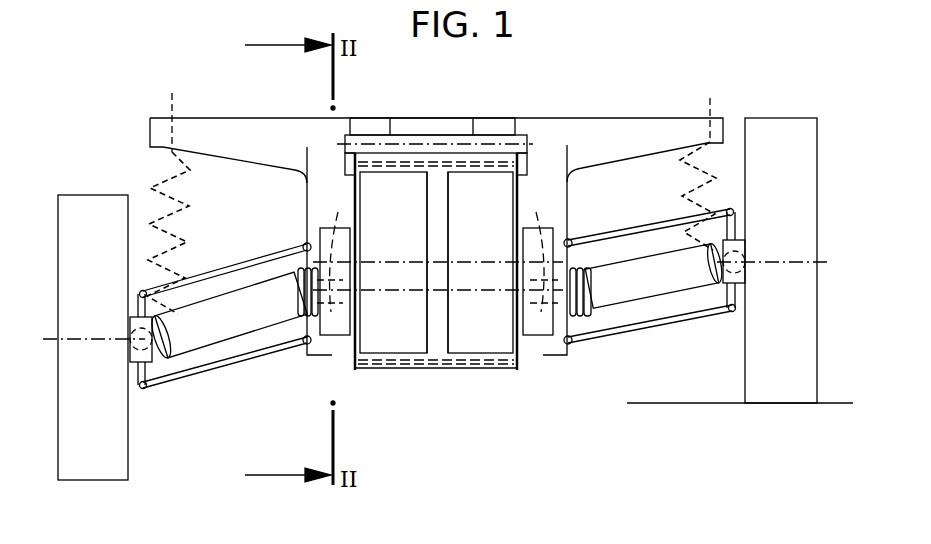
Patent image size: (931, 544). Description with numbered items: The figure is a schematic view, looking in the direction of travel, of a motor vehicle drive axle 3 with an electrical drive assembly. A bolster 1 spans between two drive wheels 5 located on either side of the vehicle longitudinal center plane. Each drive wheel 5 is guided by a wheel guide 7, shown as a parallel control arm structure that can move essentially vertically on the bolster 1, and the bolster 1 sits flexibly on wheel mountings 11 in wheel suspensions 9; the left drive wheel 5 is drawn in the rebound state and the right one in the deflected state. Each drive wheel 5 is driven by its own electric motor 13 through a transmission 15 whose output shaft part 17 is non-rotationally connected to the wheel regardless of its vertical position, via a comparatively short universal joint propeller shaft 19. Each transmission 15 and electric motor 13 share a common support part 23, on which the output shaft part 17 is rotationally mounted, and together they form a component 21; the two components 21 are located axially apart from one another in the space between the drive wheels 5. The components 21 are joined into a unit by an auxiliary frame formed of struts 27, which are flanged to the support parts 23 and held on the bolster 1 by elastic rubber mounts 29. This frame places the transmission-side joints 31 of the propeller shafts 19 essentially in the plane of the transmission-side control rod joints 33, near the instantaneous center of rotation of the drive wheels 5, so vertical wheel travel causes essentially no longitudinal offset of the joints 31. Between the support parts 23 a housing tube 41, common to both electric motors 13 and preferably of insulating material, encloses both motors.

The bolster 1 is at (593, 137).
The drive axle 3 is at (608, 358).
The drive wheel 5 is at (68, 212).
The wheel guide 7 is at (187, 390).
The wheel suspension 9 is at (172, 104).
The wheel mounting 11 is at (132, 356).
The electric motor 13 is at (392, 333).
The transmission 15 is at (343, 325).
The output shaft part 17 is at (338, 214).
The universal joint propeller shaft 19 is at (224, 318).
The component 21 is at (462, 366).
The support part 23 is at (360, 202).
The strut 27 is at (425, 140).
The elastic rubber mount 29 is at (366, 131).
The transmission-side joint 31 is at (284, 255).
The transmission-side control rod joint 33 is at (305, 242).
The housing tube 41 is at (410, 366).